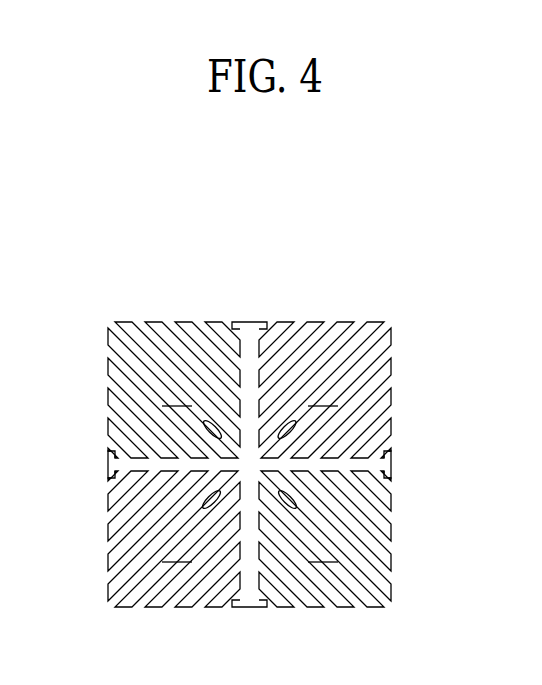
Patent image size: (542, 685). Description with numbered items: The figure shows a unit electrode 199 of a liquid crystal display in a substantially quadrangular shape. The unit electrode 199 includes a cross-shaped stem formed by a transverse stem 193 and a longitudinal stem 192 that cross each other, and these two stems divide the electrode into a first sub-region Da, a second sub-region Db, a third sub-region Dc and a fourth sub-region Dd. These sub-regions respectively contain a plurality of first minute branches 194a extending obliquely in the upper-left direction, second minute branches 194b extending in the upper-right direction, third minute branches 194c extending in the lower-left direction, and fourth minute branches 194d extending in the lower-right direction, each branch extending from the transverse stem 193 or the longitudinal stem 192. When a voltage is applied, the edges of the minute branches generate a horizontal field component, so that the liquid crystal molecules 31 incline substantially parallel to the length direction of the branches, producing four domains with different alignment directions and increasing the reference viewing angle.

The unit electrode 199 is at (329, 315).
The first minute branches 194a is at (193, 350).
The second minute branches 194b is at (360, 342).
The third minute branches 194c is at (136, 564).
The fourth minute branches 194d is at (363, 582).
The longitudinal stem 192 is at (261, 362).
The liquid crystal molecules 31 is at (296, 431).
The transverse stem 193 is at (297, 495).